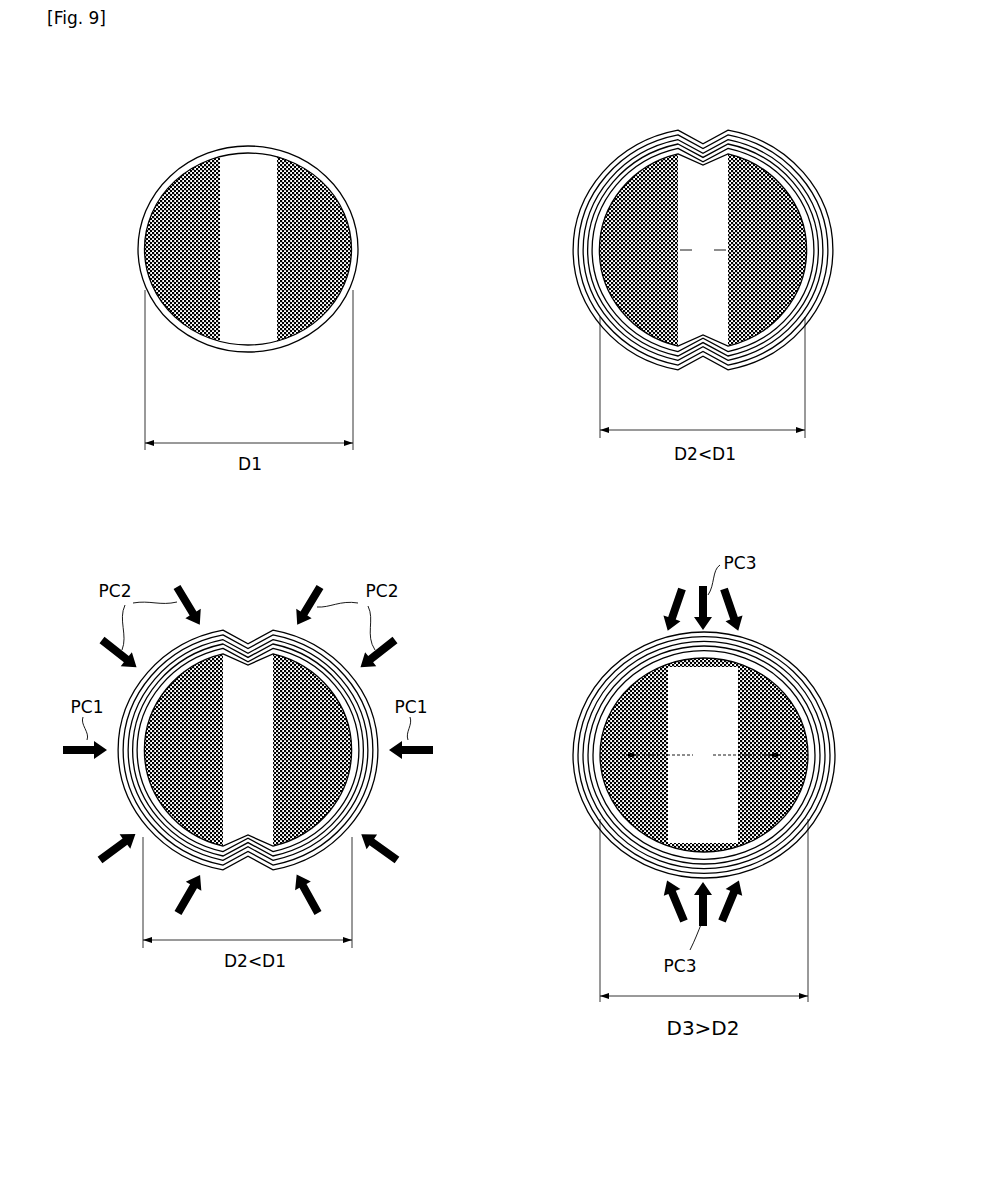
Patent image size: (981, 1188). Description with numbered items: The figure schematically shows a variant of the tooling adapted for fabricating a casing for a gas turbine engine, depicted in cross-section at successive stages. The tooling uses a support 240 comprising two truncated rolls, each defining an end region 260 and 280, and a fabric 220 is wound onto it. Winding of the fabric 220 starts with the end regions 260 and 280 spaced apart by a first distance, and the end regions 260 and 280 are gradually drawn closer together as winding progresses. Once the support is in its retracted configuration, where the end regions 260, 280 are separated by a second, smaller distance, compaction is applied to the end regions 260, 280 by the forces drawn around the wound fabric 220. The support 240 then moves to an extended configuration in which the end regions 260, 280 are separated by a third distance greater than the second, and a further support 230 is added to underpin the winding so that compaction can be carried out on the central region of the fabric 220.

The fabric 220 is at (250, 147).
The support 230 is at (710, 667).
The support 240 is at (312, 340).
The end region 260 is at (138, 272).
The end region 280 is at (358, 228).